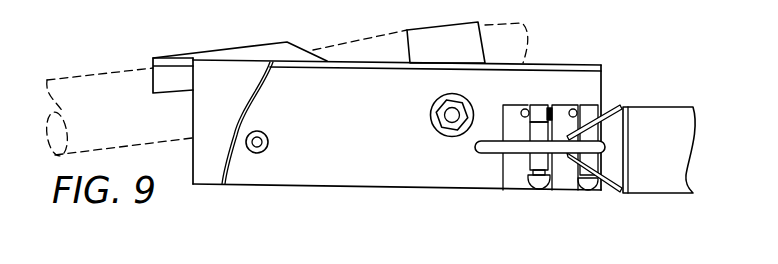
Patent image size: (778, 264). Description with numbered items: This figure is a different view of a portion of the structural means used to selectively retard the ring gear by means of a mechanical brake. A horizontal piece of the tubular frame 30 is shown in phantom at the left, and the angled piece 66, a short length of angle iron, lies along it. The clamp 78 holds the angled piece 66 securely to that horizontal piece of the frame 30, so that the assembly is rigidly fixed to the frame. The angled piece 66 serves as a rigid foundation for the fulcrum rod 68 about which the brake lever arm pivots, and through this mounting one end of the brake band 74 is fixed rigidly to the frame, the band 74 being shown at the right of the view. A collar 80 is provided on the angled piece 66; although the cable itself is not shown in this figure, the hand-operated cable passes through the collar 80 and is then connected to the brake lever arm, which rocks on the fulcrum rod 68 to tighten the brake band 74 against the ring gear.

The frame 30 is at (353, 41).
The structural element 66 is at (561, 64).
The fulcrum rod 68 is at (538, 188).
The brake band 74 is at (662, 115).
The clamp 78 is at (426, 37).
The collar 80 is at (268, 141).